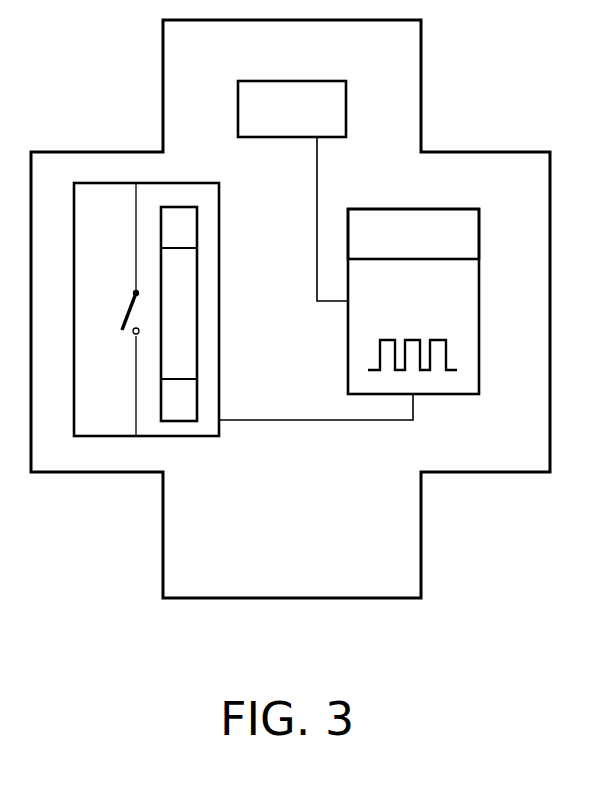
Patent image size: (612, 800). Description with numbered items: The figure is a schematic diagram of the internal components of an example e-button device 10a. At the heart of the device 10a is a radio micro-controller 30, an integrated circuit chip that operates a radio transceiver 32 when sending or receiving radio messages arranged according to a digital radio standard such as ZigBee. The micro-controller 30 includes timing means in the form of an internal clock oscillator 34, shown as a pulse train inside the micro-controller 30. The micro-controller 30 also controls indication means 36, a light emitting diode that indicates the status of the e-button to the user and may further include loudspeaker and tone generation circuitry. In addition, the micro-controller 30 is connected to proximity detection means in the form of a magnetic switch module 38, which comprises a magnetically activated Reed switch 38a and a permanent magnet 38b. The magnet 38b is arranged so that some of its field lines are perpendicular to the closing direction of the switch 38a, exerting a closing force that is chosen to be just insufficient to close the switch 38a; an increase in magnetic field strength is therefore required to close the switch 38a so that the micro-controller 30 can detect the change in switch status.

The e-button device 10a is at (421, 56).
The indication means 36 is at (346, 109).
The radio transceiver 32 is at (469, 235).
The micro-controller 30 is at (479, 302).
The internal clock oscillator 34 is at (457, 355).
The magnetic switch module 38 is at (219, 226).
The Reed switch 38a is at (127, 317).
The permanent magnet 38b is at (197, 315).